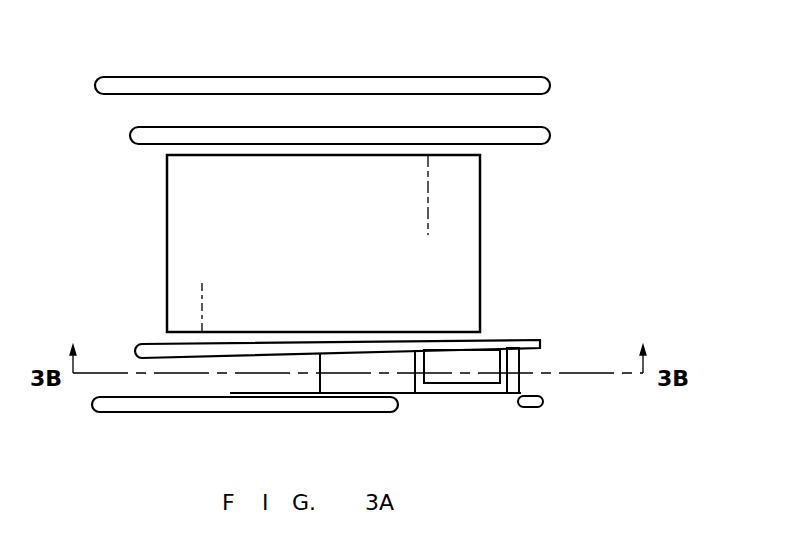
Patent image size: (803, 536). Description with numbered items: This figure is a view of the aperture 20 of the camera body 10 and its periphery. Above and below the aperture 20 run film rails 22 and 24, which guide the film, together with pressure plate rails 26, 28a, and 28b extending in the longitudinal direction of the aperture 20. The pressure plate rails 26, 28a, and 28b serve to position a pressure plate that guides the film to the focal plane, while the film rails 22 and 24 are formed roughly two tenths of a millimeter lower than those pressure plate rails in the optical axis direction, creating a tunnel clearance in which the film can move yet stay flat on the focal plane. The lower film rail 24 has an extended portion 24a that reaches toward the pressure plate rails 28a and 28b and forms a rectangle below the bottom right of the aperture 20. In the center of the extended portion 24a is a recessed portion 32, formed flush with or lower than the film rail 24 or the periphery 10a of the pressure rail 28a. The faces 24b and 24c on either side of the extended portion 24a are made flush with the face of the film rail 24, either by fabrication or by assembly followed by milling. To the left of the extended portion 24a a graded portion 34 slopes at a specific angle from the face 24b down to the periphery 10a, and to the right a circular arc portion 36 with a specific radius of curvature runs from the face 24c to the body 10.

The camera body 10 is at (560, 292).
The periphery of the pressure rail 10a is at (247, 388).
The aperture 20 is at (176, 268).
The film rail 22 is at (495, 137).
The film rail 24 is at (137, 350).
The extended portion 24a is at (452, 394).
The face of the extended portion 24b is at (415, 358).
The face of the extended portion 24c is at (505, 340).
The pressure plate rail 26 is at (485, 86).
The pressure plate rail 28a is at (160, 416).
The pressure plate rail 28b is at (532, 407).
The recessed portion 32 is at (487, 370).
The graded portion 34 is at (362, 387).
The circular arc portion 36 is at (513, 362).